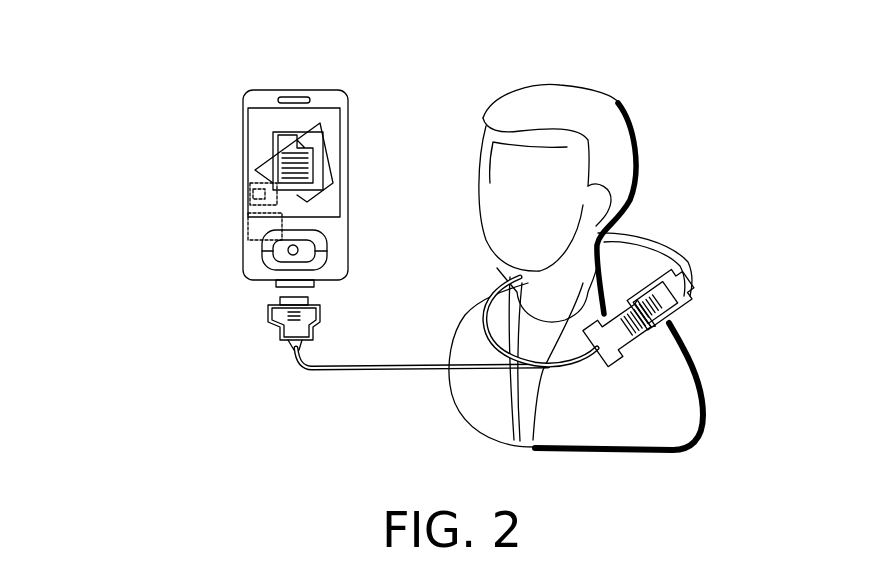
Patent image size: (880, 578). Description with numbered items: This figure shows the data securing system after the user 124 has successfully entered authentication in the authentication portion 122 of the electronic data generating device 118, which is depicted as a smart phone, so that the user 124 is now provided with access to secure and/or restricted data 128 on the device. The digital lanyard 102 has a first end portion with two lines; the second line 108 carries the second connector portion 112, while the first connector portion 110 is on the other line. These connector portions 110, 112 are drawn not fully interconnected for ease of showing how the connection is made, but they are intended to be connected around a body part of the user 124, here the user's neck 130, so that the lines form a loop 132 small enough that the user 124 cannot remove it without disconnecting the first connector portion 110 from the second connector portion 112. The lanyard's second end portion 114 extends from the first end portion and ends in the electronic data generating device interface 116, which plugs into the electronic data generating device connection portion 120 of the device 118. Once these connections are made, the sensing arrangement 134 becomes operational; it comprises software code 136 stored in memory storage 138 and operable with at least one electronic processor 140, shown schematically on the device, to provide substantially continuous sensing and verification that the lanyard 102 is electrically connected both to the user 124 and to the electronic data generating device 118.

The digital lanyard 102 is at (400, 378).
The second line 108 is at (493, 283).
The first connector portion 110 is at (693, 290).
The second connector portion 112 is at (605, 358).
The second end portion 114 is at (330, 371).
The electronic data generating device interface 116 is at (276, 325).
The electronic data generating device 118 is at (248, 96).
The electronic data generating device connection portion 120 is at (275, 283).
The authentication portion 122 is at (319, 128).
The user 124 is at (555, 85).
The secure and/or restricted data 128 is at (322, 140).
The user's neck 130 is at (650, 232).
The loop 132 is at (656, 244).
The sensing arrangement 134 is at (156, 180).
The software code 136 is at (262, 226).
The memory storage 138 is at (246, 192).
The electronic processor 140 is at (246, 180).